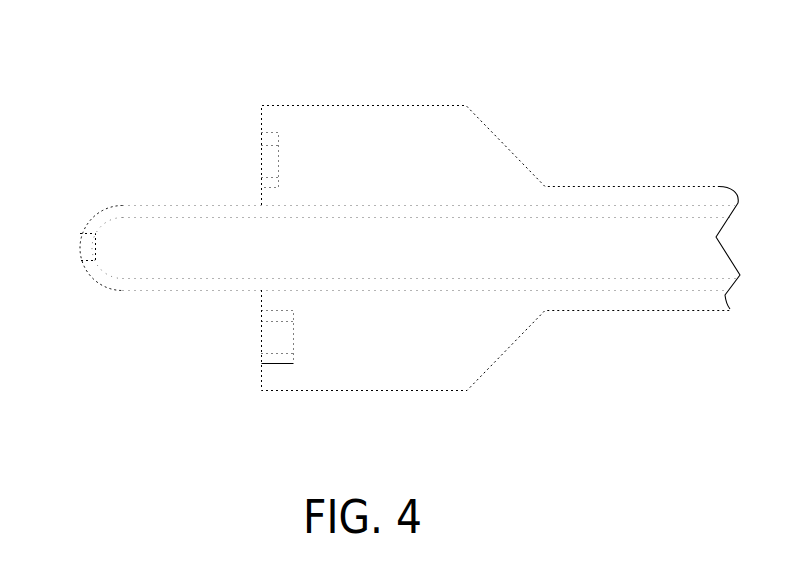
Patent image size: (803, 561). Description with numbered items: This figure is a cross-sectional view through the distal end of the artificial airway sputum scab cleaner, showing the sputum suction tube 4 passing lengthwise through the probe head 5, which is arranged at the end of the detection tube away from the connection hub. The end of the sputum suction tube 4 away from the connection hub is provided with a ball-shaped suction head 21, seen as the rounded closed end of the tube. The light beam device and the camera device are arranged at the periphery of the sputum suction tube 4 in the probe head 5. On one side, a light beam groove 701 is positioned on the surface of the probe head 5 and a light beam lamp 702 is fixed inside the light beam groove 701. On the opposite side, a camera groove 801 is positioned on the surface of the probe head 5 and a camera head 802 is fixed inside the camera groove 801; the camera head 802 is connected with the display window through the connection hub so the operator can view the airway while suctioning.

The sputum suction tube 4 is at (170, 285).
The ball-shaped suction head 21 is at (88, 268).
The probe head 5 is at (467, 152).
The light beam groove 701 is at (270, 140).
The light beam lamp 702 is at (199, 113).
The camera groove 801 is at (286, 362).
The camera head 802 is at (208, 391).